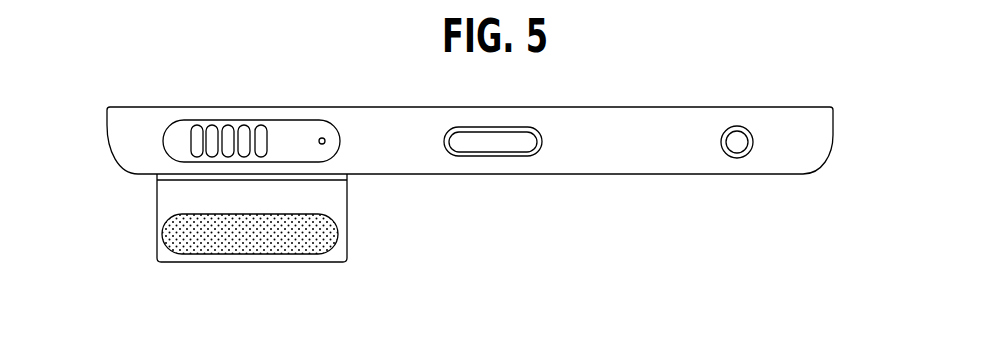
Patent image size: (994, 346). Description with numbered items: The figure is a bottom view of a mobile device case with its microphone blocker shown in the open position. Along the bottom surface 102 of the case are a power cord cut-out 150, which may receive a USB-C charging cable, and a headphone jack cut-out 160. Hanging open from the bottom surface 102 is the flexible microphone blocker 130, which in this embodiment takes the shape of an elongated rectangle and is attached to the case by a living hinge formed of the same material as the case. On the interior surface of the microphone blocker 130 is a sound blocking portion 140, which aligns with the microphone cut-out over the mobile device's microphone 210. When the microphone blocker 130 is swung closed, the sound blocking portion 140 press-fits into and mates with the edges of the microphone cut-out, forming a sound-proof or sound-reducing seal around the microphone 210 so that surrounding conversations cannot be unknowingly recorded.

The bottom surface 102 is at (788, 139).
The microphone blocker 130 is at (174, 200).
The sound blocking portion 140 is at (243, 231).
The power cord cut-out 150 is at (491, 144).
The headphone jack cut-out 160 is at (737, 126).
The microphone 210 is at (271, 138).